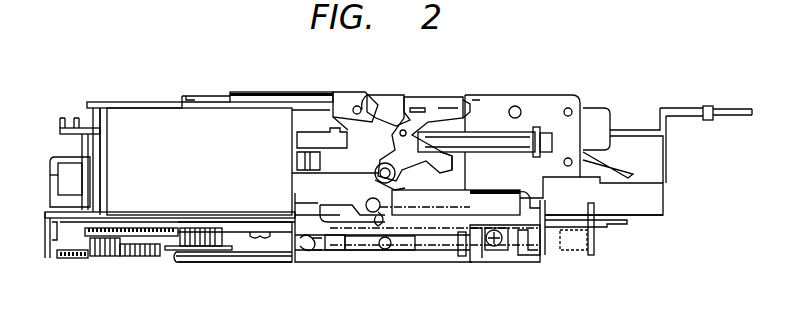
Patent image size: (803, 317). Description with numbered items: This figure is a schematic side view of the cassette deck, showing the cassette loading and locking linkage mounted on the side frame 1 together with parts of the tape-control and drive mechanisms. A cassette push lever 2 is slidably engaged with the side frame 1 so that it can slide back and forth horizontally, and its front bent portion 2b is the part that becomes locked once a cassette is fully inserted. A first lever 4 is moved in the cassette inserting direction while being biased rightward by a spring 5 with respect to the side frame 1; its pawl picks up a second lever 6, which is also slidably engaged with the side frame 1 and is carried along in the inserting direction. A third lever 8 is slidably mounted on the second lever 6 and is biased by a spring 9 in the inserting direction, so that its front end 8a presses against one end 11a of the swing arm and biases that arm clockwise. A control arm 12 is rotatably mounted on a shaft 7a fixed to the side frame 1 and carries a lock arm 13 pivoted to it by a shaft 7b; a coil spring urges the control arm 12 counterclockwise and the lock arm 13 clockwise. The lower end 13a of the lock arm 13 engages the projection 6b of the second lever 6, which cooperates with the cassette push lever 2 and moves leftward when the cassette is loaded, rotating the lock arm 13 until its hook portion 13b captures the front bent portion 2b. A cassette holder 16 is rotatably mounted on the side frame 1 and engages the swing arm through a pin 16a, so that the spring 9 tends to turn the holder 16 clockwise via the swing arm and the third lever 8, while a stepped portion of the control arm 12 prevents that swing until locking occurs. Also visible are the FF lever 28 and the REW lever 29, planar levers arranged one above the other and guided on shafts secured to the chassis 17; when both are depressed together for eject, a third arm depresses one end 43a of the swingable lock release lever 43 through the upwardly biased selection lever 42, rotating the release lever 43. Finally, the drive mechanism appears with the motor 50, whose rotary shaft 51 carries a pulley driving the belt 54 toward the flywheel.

The side frame 1 is at (555, 95).
The cassette push lever 2 is at (505, 140).
The front bent portion 2b is at (585, 150).
The first lever 4 is at (347, 194).
The spring 5 is at (517, 207).
The second lever 6 is at (425, 200).
The projection 6b is at (466, 172).
The shaft 7a is at (376, 168).
The shaft 7b is at (395, 138).
The third lever 8 is at (465, 252).
The front end 8a is at (300, 204).
The spring 9 is at (368, 248).
The one end of swing arm 11a is at (296, 242).
The control arm 12 is at (388, 100).
The lock arm 13 is at (430, 110).
The lower end 13a is at (452, 164).
The hook portion 13b is at (466, 112).
The cassette holder 16 is at (265, 92).
The pin 16a is at (360, 100).
The chassis 17 is at (625, 225).
The FF lever 28 is at (668, 110).
The REW lever 29 is at (666, 140).
The selection lever 42 is at (90, 128).
The lock release lever 43 is at (80, 178).
The one end of lock release lever 43a is at (76, 127).
The motor 50 is at (142, 103).
The rotary shaft 51 is at (190, 250).
The belt 54 is at (238, 262).